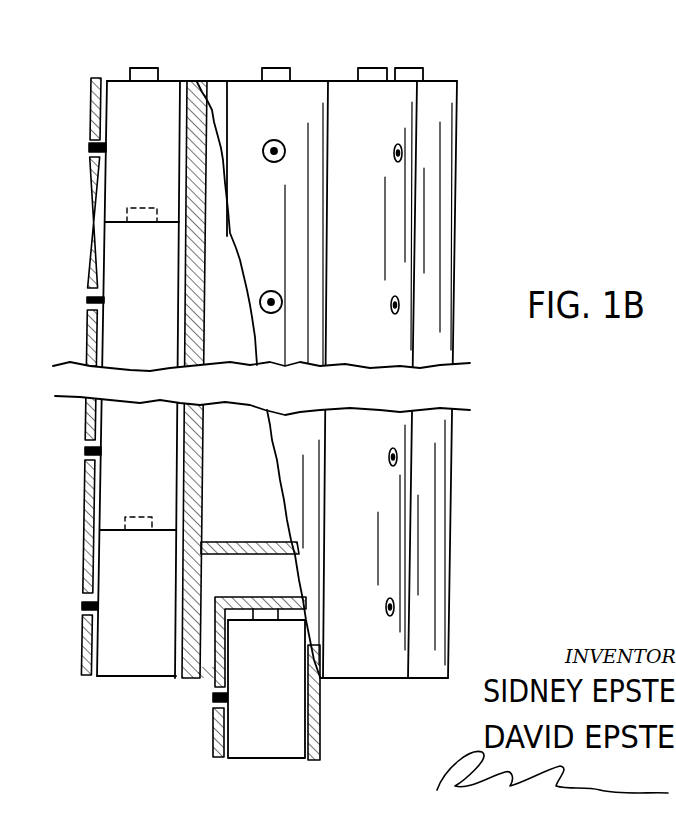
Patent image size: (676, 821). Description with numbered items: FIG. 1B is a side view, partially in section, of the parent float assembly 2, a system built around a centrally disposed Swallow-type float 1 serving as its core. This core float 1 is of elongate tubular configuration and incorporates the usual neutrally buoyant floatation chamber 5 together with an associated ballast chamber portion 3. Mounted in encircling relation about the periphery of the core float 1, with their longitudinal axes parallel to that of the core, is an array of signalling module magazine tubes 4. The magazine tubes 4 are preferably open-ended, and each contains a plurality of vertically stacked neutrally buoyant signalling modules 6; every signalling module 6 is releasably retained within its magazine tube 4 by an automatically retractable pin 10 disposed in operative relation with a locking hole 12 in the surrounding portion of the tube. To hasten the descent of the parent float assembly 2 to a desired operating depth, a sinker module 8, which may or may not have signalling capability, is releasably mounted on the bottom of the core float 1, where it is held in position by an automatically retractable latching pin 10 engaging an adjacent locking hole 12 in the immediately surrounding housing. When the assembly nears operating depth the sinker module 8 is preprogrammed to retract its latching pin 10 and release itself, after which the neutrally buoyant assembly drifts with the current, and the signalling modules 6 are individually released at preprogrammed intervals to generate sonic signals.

The Swallow-type float 1 is at (307, 81).
The parent float assembly 2 is at (198, 82).
The ballast chamber portion 3 is at (260, 623).
The signalling module magazine tubes 4 is at (188, 81).
The floatation chamber 5 is at (250, 524).
The signalling modules 6 is at (183, 81).
The sinker module 8 is at (266, 689).
The automatically retractable latching pin 10 is at (82, 147).
The locking hole 12 is at (82, 141).